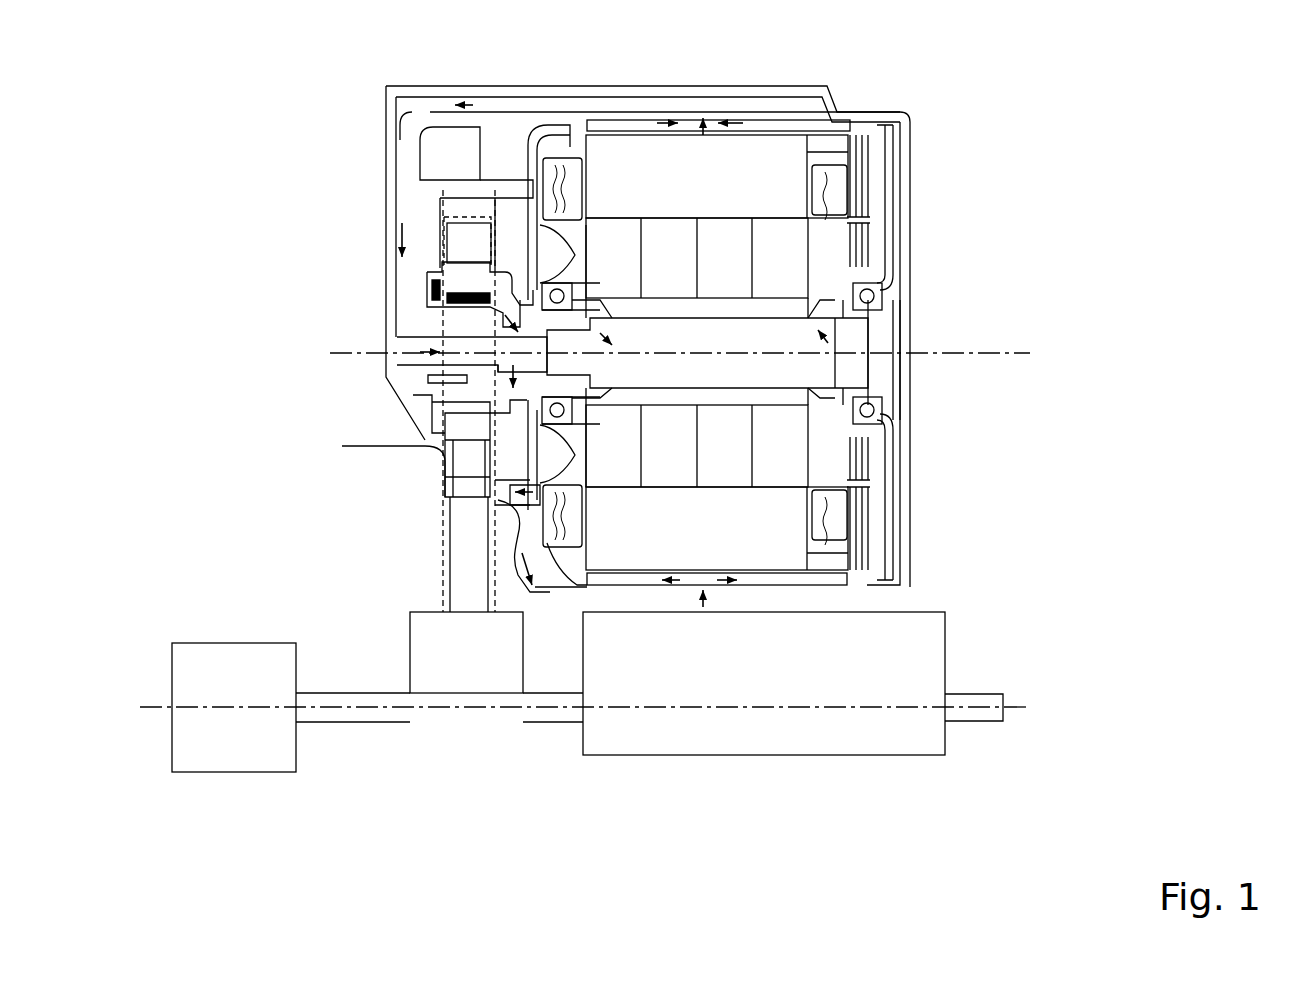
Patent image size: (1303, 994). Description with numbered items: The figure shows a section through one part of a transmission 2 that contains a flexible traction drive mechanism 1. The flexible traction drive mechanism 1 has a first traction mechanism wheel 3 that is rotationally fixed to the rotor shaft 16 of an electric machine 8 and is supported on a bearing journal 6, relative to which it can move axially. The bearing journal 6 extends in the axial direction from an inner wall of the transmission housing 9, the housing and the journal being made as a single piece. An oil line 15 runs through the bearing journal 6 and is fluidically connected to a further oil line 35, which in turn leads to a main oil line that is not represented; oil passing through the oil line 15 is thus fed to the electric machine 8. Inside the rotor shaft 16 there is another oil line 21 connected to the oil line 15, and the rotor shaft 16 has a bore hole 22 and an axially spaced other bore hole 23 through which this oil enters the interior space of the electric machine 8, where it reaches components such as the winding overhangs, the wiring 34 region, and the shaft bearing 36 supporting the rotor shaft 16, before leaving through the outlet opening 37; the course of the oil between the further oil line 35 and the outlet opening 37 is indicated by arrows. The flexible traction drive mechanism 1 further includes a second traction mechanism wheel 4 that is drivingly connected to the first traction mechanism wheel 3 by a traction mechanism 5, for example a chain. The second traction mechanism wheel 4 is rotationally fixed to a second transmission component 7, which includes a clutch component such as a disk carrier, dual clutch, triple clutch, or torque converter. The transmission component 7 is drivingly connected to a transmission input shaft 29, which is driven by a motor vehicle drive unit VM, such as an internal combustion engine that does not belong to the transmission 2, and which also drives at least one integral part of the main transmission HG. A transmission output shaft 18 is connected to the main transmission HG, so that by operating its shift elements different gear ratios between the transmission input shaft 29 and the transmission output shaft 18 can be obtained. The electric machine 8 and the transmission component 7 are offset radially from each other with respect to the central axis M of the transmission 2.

The flexible traction drive mechanism 1 is at (452, 211).
The transmission 2 is at (1006, 131).
The first traction mechanism wheel 3 is at (468, 280).
The second traction mechanism wheel 4 is at (463, 558).
The traction mechanism 5 is at (465, 465).
The bearing journal 6 is at (410, 386).
The transmission component 7 is at (480, 676).
The electric machine 8 is at (940, 471).
The transmission housing 9 is at (420, 212).
The oil line 15 is at (467, 352).
The rotor shaft 16 is at (664, 308).
The transmission output shaft 18 is at (985, 715).
The other oil line 21 is at (835, 368).
The bore hole 22 is at (600, 310).
The other bore hole 23 is at (853, 316).
The transmission input shaft 29 is at (407, 713).
The wiring 34 is at (890, 194).
The further oil line 35 is at (778, 123).
The shaft bearing 36 is at (890, 292).
The outlet opening 37 is at (530, 498).
The central axis M is at (1012, 707).
The motor vehicle drive unit VM is at (236, 776).
The main transmission HG is at (743, 763).